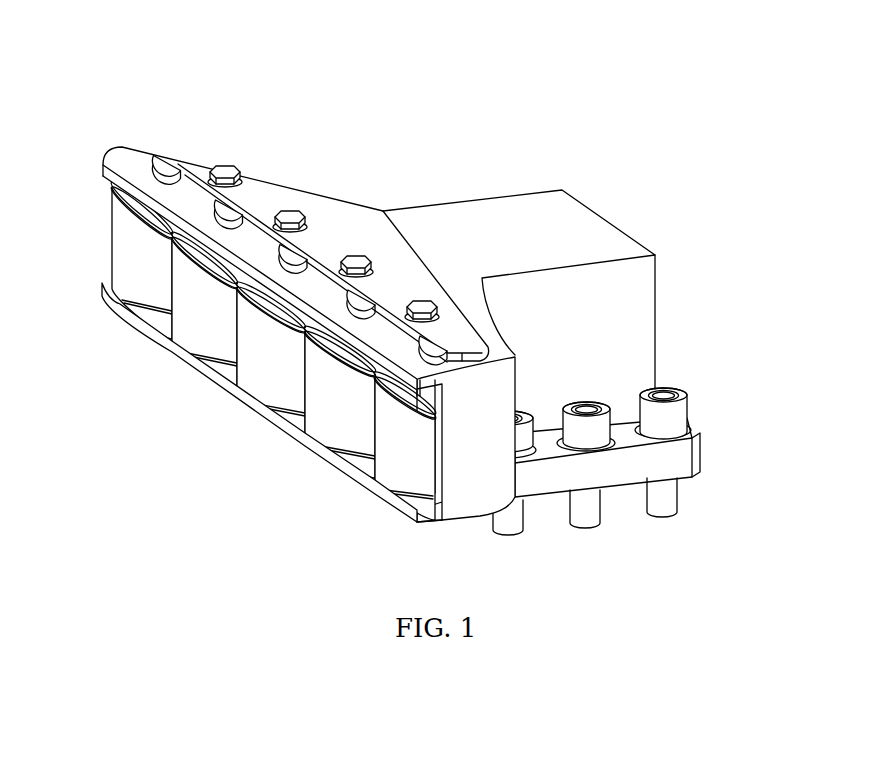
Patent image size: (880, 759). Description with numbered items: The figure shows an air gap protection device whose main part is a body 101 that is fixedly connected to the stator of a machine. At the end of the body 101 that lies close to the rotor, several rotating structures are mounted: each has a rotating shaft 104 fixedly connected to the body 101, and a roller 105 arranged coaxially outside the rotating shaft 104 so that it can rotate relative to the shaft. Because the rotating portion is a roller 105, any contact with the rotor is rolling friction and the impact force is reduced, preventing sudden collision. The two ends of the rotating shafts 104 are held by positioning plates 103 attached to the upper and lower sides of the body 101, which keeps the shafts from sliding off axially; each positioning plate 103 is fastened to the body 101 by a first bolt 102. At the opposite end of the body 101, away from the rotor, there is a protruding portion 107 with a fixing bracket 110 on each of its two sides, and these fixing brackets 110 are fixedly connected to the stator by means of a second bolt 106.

The body 101 is at (482, 432).
The first bolt 102 is at (292, 217).
The positioning plate 103 is at (195, 160).
The rotating shaft 104 is at (162, 165).
The roller 105 is at (140, 263).
The second bolt 106 is at (663, 497).
The protruding portion 107 is at (608, 247).
The fixing bracket 110 is at (673, 467).